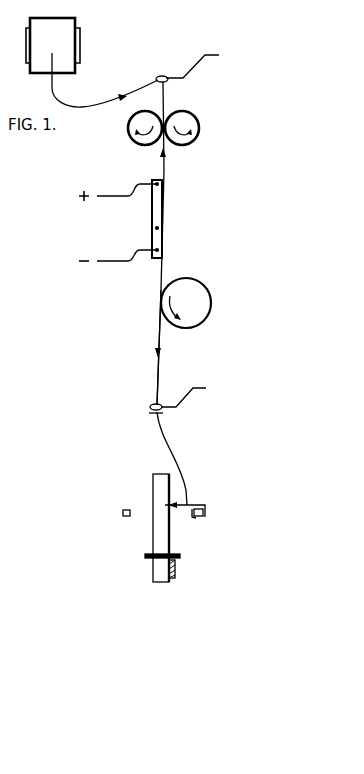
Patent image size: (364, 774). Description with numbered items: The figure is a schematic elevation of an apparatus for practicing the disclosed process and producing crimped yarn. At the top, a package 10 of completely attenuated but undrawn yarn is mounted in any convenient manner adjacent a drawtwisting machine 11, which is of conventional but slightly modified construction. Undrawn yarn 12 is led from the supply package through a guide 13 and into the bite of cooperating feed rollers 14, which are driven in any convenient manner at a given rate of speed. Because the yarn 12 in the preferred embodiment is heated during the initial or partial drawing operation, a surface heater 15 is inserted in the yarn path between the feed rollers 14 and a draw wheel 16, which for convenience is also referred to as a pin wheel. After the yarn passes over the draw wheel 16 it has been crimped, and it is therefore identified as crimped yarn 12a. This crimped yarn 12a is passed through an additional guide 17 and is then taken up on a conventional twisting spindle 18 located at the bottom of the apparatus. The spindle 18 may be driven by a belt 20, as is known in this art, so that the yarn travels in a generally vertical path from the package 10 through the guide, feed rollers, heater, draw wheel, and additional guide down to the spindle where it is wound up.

The package 10 is at (80, 36).
The drawtwisting machine 11 is at (206, 239).
The undrawn yarn 12 is at (82, 107).
The crimped yarn 12a is at (157, 375).
The guide 13 is at (163, 78).
The feed rollers 14 is at (137, 143).
The surface heater 15 is at (157, 228).
The draw wheel 16 is at (201, 303).
The additional guide 17 is at (150, 407).
The twisting spindle 18 is at (120, 544).
The belt 20 is at (176, 571).